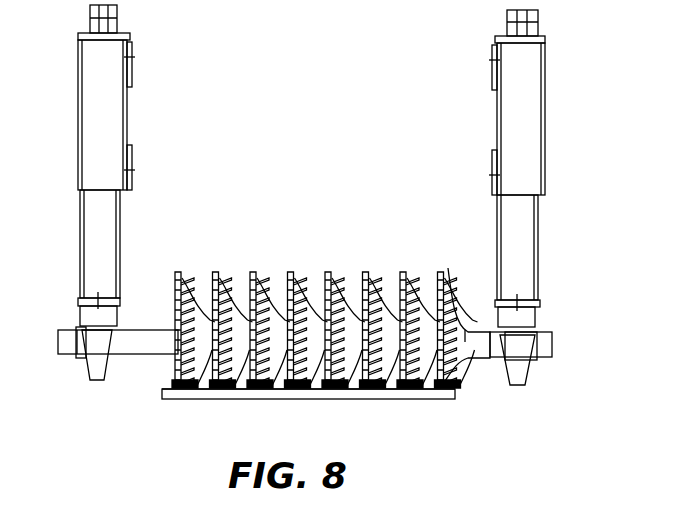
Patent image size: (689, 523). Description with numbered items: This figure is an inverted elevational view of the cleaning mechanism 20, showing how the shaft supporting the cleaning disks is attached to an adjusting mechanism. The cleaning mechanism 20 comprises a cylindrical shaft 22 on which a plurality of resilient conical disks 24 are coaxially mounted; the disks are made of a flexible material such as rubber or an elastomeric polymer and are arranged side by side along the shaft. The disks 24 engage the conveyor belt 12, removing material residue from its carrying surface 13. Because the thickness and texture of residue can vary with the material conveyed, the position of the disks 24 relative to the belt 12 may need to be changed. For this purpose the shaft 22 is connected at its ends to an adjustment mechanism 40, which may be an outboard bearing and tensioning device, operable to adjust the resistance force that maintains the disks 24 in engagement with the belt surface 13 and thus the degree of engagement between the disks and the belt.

The adjustment mechanism 40 is at (103, 105).
The cleaning mechanism 20 is at (372, 257).
The resilient conical disks 24 is at (465, 338).
The cylindrical shaft 22 is at (142, 343).
The surface 13 is at (452, 393).
The conveyor belt 12 is at (428, 399).